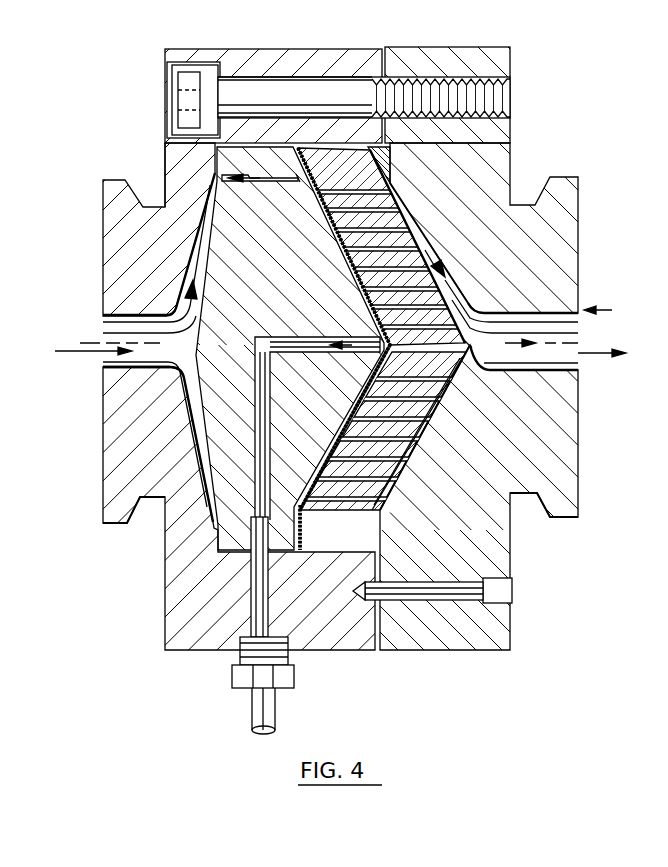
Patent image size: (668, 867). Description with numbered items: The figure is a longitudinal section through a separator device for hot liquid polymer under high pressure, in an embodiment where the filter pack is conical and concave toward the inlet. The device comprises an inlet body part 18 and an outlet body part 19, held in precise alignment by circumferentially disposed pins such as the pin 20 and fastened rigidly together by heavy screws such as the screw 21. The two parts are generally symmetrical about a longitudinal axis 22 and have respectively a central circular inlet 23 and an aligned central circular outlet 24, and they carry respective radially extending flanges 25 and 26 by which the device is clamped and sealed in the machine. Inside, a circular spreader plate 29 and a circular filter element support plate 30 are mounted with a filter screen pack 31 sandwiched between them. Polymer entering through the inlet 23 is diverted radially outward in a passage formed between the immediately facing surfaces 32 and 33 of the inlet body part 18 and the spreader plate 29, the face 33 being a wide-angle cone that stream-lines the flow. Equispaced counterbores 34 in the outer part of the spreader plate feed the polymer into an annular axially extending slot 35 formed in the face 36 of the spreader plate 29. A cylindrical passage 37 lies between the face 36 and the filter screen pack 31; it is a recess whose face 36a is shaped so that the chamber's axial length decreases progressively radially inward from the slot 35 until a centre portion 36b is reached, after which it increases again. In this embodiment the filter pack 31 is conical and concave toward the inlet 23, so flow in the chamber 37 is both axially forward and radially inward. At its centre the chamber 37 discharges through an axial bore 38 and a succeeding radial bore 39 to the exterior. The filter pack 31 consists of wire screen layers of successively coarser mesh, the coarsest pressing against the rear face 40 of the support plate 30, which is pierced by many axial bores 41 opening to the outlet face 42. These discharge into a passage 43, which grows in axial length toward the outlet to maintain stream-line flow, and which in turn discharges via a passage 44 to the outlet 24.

The inlet body part 18 is at (106, 214).
The outlet body part 19 is at (572, 202).
The pin 20 is at (424, 600).
The screw 21 is at (310, 88).
The longitudinal axis 22 is at (106, 340).
The central circular inlet 23 is at (108, 360).
The central circular outlet 24 is at (619, 307).
The radially extending flange 25 is at (120, 508).
The radially extending flange 26 is at (574, 521).
The spreader plate 29 is at (290, 284).
The filter element support plate 30 is at (367, 168).
The filter screen pack 31 is at (363, 303).
The facing surface 32 is at (200, 400).
The facing surface 33 is at (207, 432).
The counterbore 34 is at (243, 186).
The annular axially extending slot 35 is at (297, 195).
The face of the spreader plate 36 is at (300, 165).
The face of the recess 36a is at (324, 237).
The centre portion 36b is at (378, 354).
The cylindrical passage 37 is at (345, 272).
The axial bore 38 is at (254, 346).
The radial bore 39 is at (251, 578).
The rear face of the support plate 40 is at (300, 508).
The axial bore 41 is at (493, 413).
The outlet face 42 is at (468, 348).
The passage 43 is at (455, 276).
The passage 44 is at (580, 372).